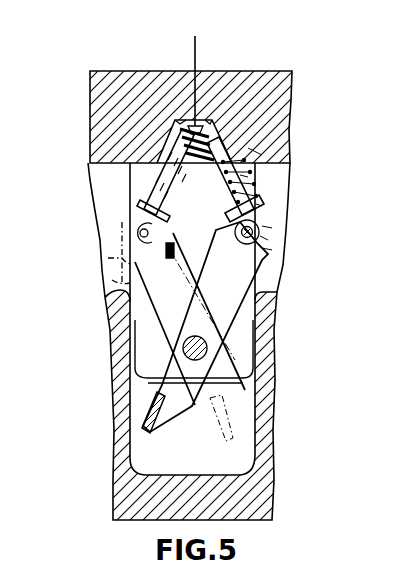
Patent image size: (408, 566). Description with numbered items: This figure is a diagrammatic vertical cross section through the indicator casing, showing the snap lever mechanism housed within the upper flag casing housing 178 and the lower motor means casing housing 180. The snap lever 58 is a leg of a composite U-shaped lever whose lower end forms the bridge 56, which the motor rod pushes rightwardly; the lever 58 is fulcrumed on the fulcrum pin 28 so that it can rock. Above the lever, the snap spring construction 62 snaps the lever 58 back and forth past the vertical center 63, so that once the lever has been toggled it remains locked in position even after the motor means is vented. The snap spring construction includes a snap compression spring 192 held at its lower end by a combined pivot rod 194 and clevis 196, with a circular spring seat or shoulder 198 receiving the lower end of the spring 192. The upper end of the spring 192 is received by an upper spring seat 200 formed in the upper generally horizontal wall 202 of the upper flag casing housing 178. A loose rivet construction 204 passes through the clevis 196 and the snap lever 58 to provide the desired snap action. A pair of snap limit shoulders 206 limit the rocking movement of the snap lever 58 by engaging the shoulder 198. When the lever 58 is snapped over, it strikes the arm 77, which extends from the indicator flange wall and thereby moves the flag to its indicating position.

The fulcrum pin 28 is at (207, 348).
The bridge 56 is at (150, 408).
The snap lever 58 is at (226, 308).
The snap spring construction 62 is at (270, 194).
The vertical center 63 is at (197, 55).
The arm 77 is at (168, 252).
The upper flag casing housing 178 is at (282, 100).
The lower motor means casing housing 180 is at (152, 512).
The snap compression spring 192 is at (248, 177).
The pivot rod 194 is at (262, 155).
The clevis 196 is at (272, 228).
The spring seat or shoulder 198 is at (262, 206).
The upper spring seat 200 is at (200, 98).
The upper generally horizontal wall 202 is at (134, 82).
The loose rivet construction 204 is at (268, 240).
The snap limit shoulders 206 is at (212, 232).